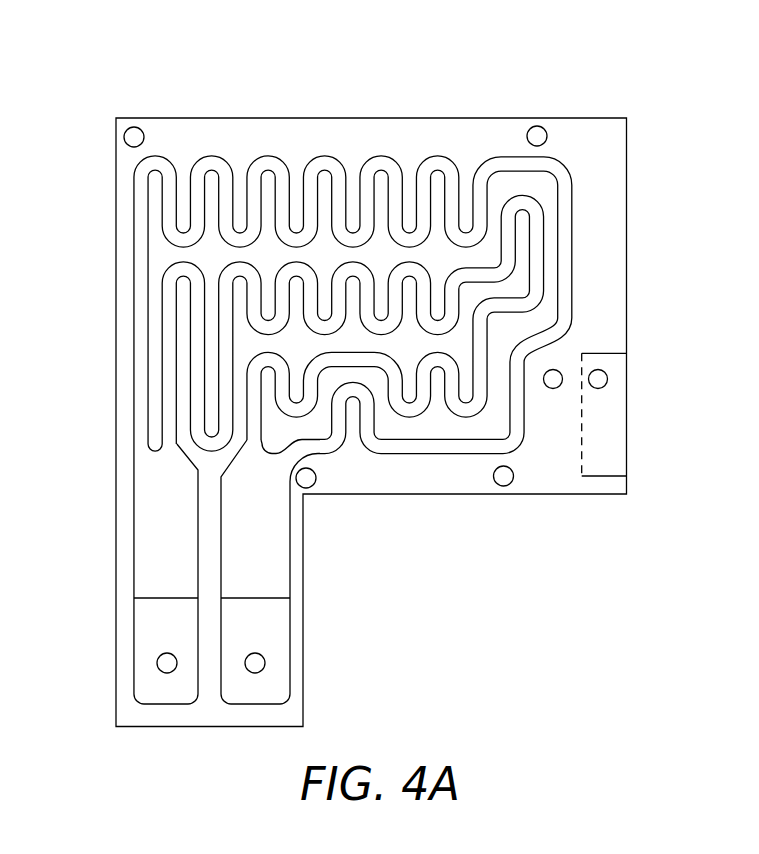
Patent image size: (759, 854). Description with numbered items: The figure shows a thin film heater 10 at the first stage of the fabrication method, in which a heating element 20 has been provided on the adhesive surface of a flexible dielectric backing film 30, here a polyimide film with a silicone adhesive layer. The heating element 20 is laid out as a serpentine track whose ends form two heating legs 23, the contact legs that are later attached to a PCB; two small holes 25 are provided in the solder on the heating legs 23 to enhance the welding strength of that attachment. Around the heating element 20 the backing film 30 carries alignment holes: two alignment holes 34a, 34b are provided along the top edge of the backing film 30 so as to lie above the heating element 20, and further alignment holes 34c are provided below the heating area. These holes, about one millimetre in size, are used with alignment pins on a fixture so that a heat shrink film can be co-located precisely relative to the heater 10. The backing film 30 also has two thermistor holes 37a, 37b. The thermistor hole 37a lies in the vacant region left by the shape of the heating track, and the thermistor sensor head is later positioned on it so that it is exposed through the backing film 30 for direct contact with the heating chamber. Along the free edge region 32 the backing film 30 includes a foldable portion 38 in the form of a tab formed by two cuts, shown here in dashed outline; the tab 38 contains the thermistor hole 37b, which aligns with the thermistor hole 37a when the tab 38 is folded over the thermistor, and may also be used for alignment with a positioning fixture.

The thin film heater 10 is at (381, 401).
The heating element 20 is at (135, 255).
The heating legs 23 is at (150, 530).
The holes 25 is at (167, 663).
The flexible dielectric backing film 30 is at (315, 132).
The free edge region 32 is at (620, 178).
The alignment hole 34a is at (134, 137).
The alignment hole 34b is at (537, 136).
The alignment hole 34c is at (306, 478).
The thermistor hole 37a is at (553, 379).
The thermistor hole 37b is at (598, 379).
The foldable portion 38 is at (618, 437).